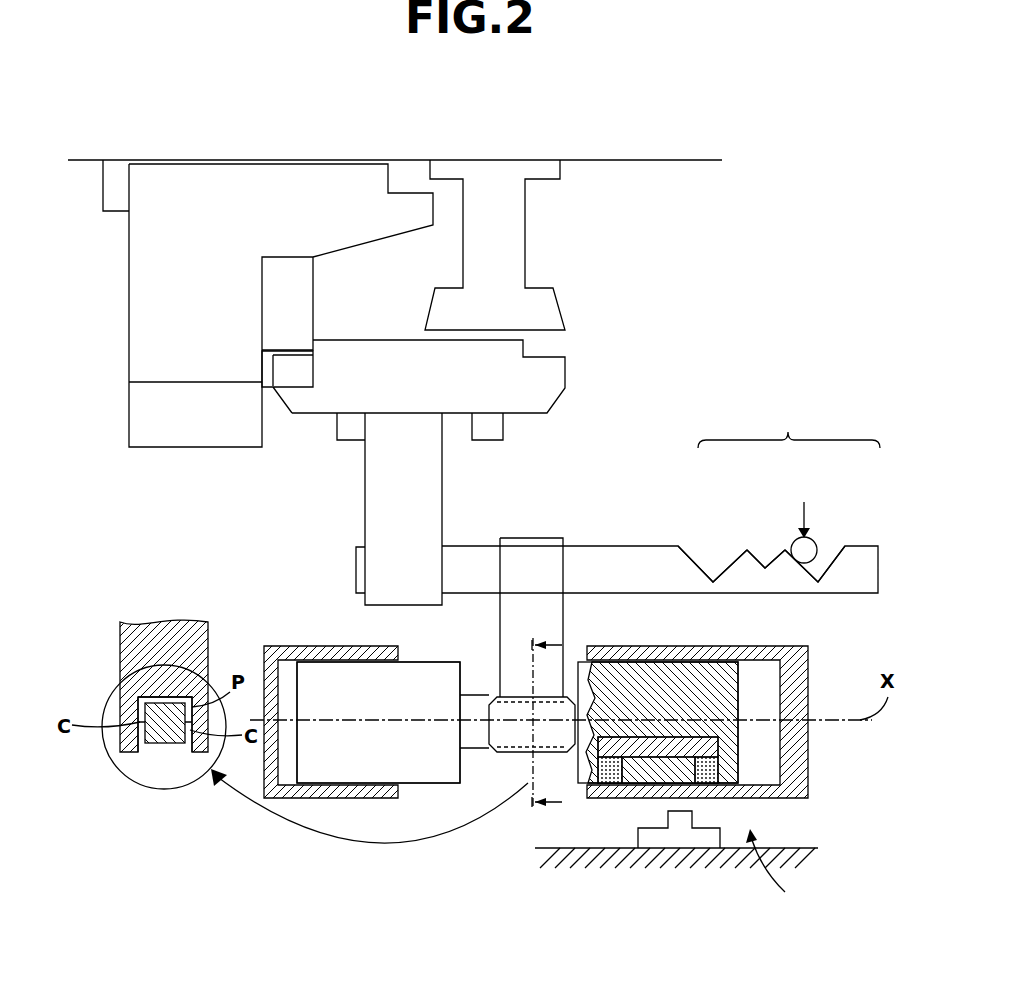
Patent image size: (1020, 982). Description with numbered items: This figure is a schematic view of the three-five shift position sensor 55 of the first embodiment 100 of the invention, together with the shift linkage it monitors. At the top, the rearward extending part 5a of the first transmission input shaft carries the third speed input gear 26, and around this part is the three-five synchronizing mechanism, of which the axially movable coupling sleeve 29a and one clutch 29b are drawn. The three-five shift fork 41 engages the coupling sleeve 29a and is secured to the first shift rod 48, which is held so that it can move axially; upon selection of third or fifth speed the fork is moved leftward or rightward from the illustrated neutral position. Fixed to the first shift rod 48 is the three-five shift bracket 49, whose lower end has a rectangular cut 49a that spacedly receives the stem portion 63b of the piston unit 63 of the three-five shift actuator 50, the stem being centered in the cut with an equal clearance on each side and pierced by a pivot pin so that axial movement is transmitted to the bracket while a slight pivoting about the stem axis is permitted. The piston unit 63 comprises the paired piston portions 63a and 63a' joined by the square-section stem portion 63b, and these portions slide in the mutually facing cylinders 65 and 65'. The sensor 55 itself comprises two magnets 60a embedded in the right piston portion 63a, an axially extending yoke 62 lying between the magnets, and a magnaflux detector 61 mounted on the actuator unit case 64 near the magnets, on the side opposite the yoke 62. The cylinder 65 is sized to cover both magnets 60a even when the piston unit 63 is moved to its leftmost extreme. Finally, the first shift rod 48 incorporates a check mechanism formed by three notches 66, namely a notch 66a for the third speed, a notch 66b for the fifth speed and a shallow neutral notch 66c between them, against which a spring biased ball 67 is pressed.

The first embodiment 100 is at (815, 95).
The rearward extending part 5a is at (675, 162).
The third speed input gear 26 is at (190, 420).
The coupling sleeve 29a is at (550, 383).
The clutch 29b is at (300, 373).
The 3-5 shift fork 41 is at (430, 490).
The first shift rod 48 is at (608, 558).
The 3-5 shift bracket 49 is at (548, 620).
The rectangular cut 49a is at (145, 703).
The 3-5 shift actuator 50 is at (814, 698).
The 3-5 shift position sensor 55 is at (774, 874).
The magnets 60a is at (607, 783).
The magnaflux detector 61 is at (678, 836).
The yoke 62 is at (668, 750).
The piston unit 63 is at (422, 654).
The piston portion 63a is at (734, 757).
The piston portion 63a' is at (378, 745).
The stem portion 63b is at (165, 742).
The actuator unit case 64 is at (613, 846).
The cylinder 65 is at (697, 706).
The cylinder 65' is at (331, 680).
The notches 66 is at (789, 426).
The notch for the third speed 66a is at (695, 558).
The notch for the fifth speed 66b is at (835, 553).
The neutral shallow notch 66c is at (765, 565).
The spring biased ball 67 is at (813, 558).